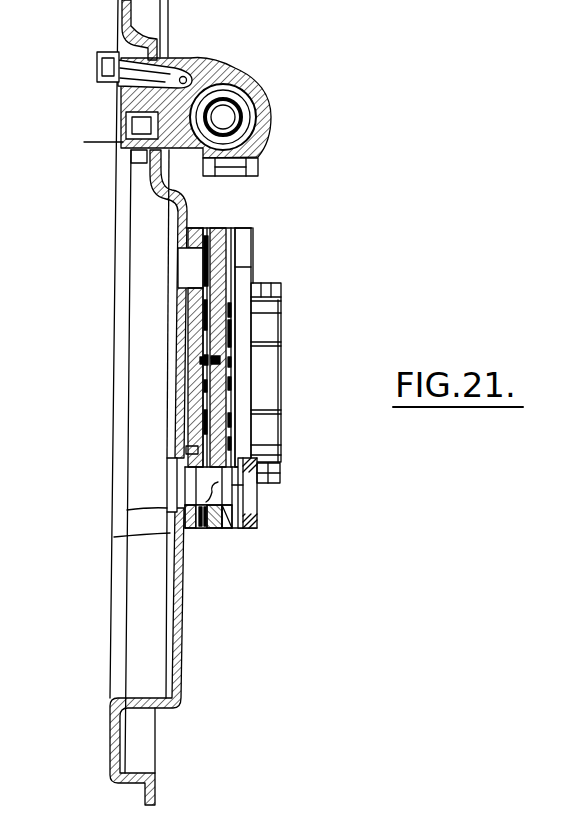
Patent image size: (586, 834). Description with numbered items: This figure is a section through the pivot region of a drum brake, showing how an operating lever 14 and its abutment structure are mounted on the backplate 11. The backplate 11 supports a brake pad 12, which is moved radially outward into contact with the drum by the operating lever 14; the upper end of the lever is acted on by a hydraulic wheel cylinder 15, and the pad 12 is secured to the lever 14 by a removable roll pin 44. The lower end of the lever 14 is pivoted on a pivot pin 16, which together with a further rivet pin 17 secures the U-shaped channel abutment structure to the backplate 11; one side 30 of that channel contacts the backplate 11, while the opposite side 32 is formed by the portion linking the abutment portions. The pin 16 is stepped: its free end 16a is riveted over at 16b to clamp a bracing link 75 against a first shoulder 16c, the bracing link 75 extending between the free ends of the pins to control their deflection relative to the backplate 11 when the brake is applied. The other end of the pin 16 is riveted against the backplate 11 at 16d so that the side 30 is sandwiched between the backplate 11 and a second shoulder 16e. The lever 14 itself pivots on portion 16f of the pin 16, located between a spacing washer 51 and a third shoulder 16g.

The backplate 11 is at (177, 641).
The brake pad 12 is at (267, 359).
The operating lever 14 is at (192, 334).
The hydraulic wheel cylinder 15 is at (253, 68).
The pivot pin 16 is at (266, 507).
The free end of pin 16a is at (268, 482).
The riveted-over portion 16b is at (262, 486).
The first shoulder 16c is at (259, 488).
The riveted end against backplate 16d is at (167, 478).
The second shoulder 16e is at (167, 497).
The pivot portion of pin 16f is at (205, 503).
The third shoulder 16g is at (230, 520).
The rivet pin 17 is at (206, 258).
The side of abutment structure 30 is at (214, 361).
The opposite side of channel structure 32 is at (244, 277).
The roll pin 44 is at (214, 379).
The spacing washer 51 is at (190, 452).
The bracing link 75 is at (247, 510).